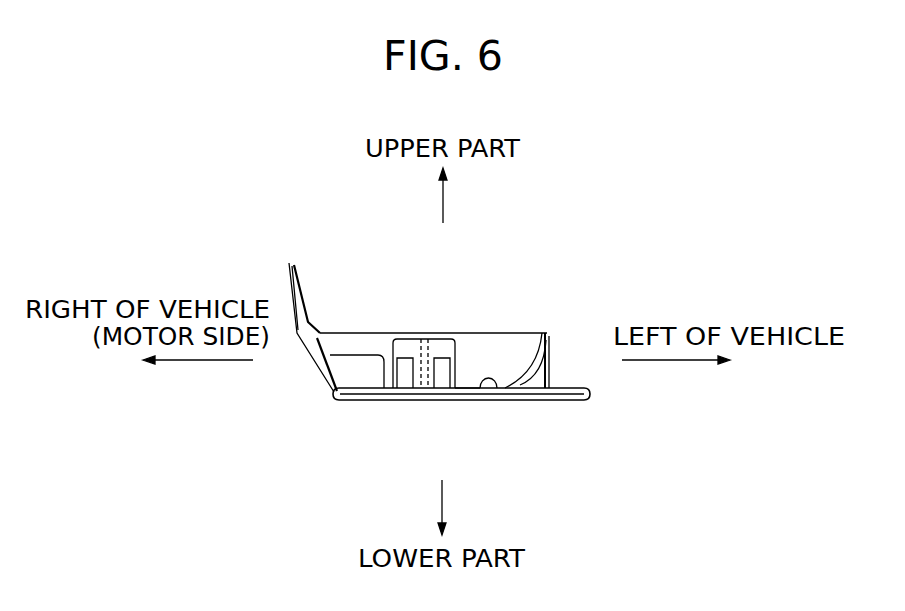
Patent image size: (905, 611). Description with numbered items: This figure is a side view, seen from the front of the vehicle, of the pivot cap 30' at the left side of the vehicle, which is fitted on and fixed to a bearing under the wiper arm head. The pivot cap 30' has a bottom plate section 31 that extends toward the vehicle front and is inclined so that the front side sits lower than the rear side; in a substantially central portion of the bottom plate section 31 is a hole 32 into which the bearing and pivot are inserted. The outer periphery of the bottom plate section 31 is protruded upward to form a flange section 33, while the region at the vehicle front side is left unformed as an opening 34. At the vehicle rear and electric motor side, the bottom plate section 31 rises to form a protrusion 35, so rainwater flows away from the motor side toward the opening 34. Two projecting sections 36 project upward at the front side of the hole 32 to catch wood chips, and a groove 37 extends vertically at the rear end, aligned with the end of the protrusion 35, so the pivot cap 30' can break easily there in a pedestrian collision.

The pivot cap 30' is at (439, 342).
The bottom plate section 31 is at (498, 390).
The hole 32 is at (412, 390).
The flange section 33 is at (537, 332).
The opening 34 is at (468, 367).
The protrusion 35 is at (358, 352).
The projecting section 36 is at (407, 358).
The groove 37 is at (427, 337).